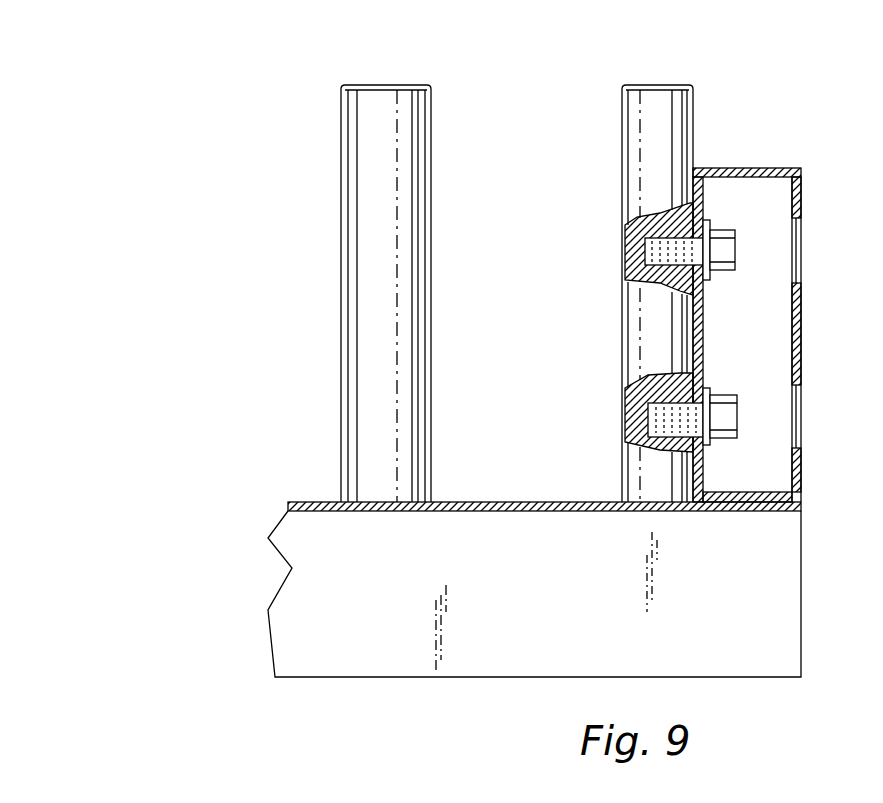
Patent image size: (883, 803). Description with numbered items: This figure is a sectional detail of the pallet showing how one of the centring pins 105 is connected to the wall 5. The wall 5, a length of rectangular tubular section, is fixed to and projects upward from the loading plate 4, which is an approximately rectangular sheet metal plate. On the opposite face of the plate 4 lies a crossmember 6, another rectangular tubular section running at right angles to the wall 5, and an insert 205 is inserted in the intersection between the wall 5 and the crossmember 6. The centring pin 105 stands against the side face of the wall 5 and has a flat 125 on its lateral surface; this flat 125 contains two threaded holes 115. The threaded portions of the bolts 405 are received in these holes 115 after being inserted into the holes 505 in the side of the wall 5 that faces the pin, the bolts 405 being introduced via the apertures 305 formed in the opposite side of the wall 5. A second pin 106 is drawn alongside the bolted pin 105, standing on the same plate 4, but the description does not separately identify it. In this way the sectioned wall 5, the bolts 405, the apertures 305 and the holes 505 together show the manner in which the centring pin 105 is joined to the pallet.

The loading plate 4 is at (357, 513).
The wall 5 is at (780, 333).
The crossmember 6 is at (293, 647).
The centring pin 105 is at (675, 285).
The tubular post 106 is at (348, 157).
The threaded hole 115 is at (676, 320).
The flat 125 is at (693, 118).
The insert 205 is at (801, 505).
The aperture 305 is at (801, 253).
The bolt 405 is at (735, 232).
The hole 505 is at (703, 296).